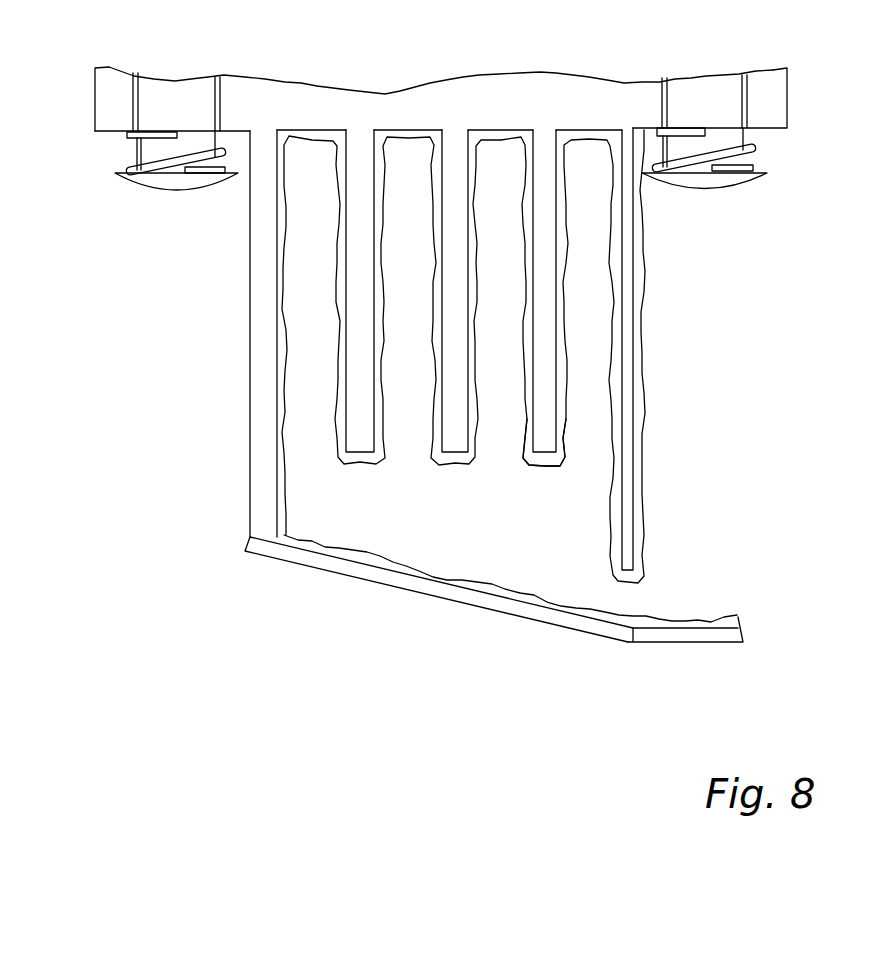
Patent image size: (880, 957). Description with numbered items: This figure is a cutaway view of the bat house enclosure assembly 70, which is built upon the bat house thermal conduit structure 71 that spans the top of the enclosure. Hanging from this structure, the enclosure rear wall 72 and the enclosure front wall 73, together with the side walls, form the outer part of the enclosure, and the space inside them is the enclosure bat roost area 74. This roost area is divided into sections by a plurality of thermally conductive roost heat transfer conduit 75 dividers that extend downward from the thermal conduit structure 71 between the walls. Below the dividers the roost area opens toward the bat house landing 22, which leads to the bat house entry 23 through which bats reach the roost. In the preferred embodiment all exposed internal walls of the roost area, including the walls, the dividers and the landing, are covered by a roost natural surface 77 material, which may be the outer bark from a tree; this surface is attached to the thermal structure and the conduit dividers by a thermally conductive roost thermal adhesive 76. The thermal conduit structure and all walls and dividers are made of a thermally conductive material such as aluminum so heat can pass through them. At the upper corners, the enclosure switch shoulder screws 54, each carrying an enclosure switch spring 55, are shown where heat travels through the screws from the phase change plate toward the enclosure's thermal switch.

The bat house landing 22 is at (728, 618).
The bat house entry 23 is at (660, 593).
The enclosure switch shoulder screw 54 is at (145, 183).
The enclosure switch spring 55 is at (130, 170).
The bat house enclosure assembly 70 is at (166, 462).
The bat house thermal conduit structure 71 is at (374, 92).
The enclosure rear wall 72 is at (250, 375).
The enclosure front wall 73 is at (627, 313).
The enclosure bat roost area 74 is at (405, 453).
The roost heat transfer conduit 75 is at (543, 238).
The roost thermal adhesive 76 is at (528, 438).
The roost natural surface 77 is at (334, 287).